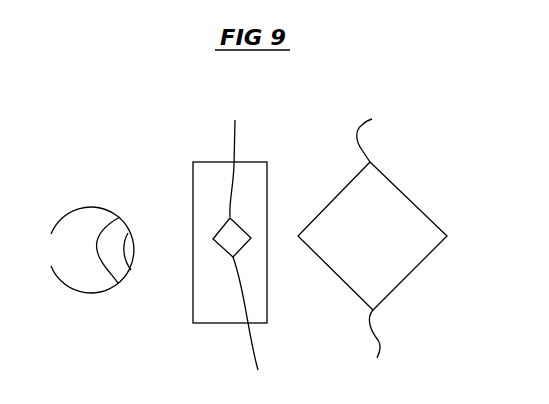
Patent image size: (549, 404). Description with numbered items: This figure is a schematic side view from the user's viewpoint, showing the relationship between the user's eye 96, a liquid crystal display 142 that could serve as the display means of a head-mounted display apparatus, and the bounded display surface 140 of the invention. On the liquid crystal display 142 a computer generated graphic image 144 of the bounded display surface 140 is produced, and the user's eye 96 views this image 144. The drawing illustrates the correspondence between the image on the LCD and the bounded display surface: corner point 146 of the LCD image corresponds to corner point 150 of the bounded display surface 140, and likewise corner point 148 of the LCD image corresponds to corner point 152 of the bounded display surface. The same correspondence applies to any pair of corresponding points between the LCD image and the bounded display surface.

The user's eye 96 is at (83, 250).
The bounded display surface 140 is at (383, 203).
The liquid crystal display 142 is at (210, 187).
The graphic image 144 is at (228, 237).
The corner point 146 is at (242, 154).
The corner point 148 is at (255, 327).
The corner point 150 is at (384, 130).
The corner point 152 is at (368, 351).